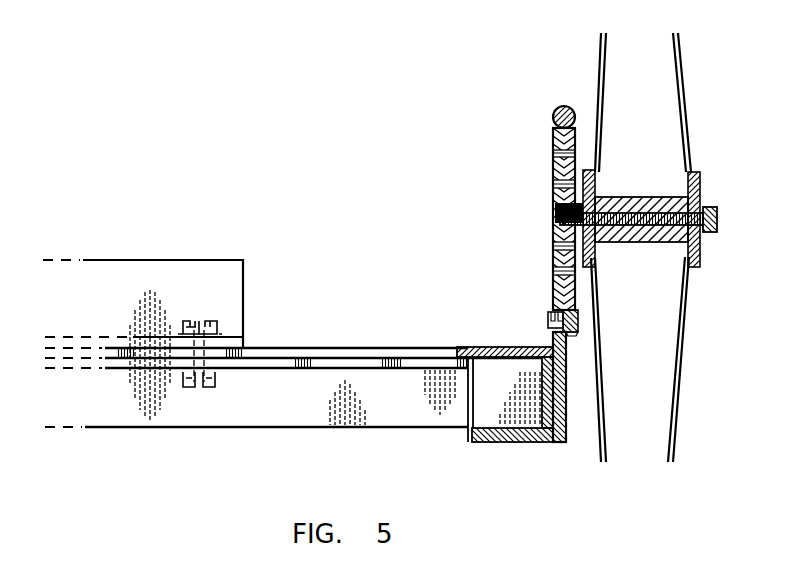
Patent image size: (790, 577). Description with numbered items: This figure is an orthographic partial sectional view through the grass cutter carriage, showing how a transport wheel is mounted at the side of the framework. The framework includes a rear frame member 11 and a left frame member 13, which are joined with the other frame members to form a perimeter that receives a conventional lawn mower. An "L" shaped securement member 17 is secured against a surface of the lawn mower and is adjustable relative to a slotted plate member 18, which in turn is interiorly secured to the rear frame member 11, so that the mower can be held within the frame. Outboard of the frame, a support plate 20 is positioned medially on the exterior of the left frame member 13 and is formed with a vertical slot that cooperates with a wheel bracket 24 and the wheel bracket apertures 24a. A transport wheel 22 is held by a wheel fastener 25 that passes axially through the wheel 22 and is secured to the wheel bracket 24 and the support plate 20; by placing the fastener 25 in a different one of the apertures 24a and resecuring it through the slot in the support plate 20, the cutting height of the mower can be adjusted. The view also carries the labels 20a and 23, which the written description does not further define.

The rear frame member 11 is at (450, 420).
The left frame member 13 is at (497, 346).
The "L" shaped securement member 17 is at (192, 261).
The slotted plate member 18 is at (243, 353).
The support plate 20 is at (552, 168).
The column hub 20a is at (552, 222).
The transport wheel 22 is at (680, 64).
The end cap 23 is at (562, 107).
The wheel bracket 24 is at (580, 136).
The wheel bracket aperture 24a is at (580, 288).
The wheel fastener 25 is at (570, 332).